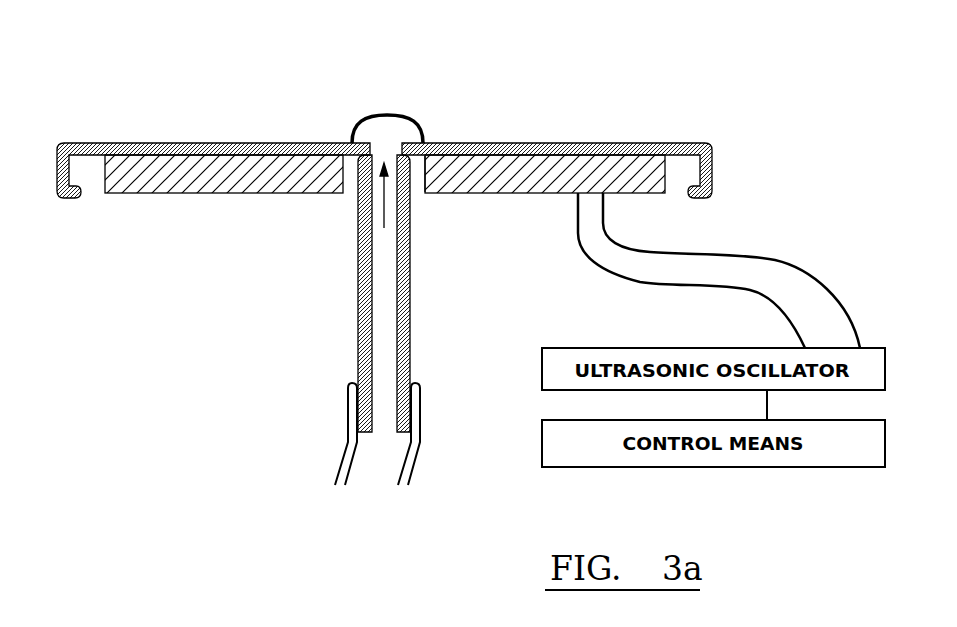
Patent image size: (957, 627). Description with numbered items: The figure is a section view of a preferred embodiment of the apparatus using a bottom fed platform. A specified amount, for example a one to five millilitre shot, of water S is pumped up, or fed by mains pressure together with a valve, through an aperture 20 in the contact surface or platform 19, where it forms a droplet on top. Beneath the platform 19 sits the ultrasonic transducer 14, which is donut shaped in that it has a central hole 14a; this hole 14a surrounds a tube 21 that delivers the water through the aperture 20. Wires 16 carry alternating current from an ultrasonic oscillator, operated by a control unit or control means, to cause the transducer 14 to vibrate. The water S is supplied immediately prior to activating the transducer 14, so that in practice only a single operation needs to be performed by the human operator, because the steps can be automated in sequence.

The contact surface (platform) 19 is at (189, 143).
The ultrasonic transducer 14 is at (153, 194).
The central hole 14a is at (422, 193).
The aperture 20 is at (360, 237).
The tube 21 is at (360, 313).
The wires 16 is at (717, 254).
The water S is at (390, 127).